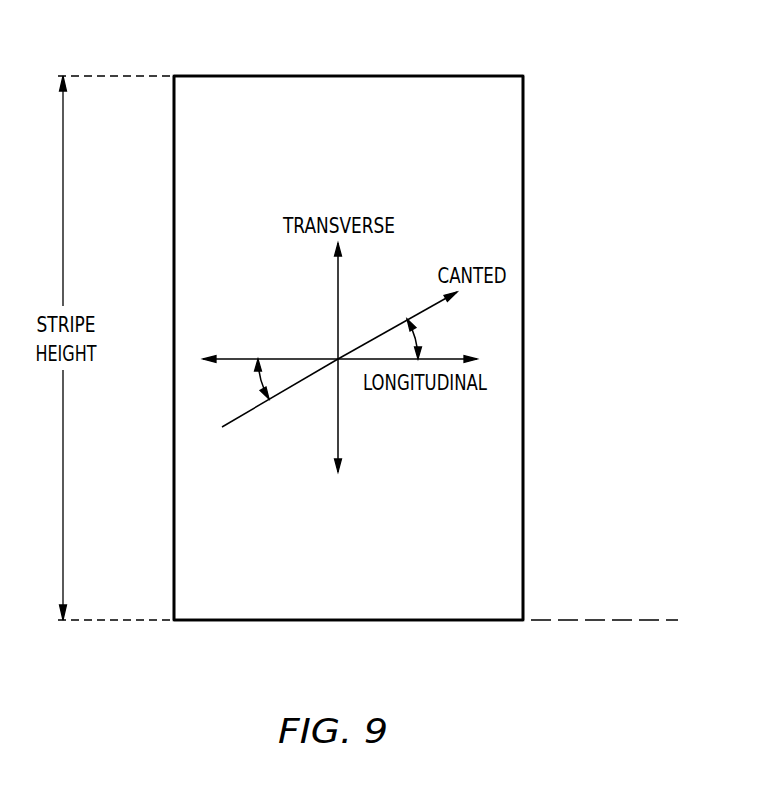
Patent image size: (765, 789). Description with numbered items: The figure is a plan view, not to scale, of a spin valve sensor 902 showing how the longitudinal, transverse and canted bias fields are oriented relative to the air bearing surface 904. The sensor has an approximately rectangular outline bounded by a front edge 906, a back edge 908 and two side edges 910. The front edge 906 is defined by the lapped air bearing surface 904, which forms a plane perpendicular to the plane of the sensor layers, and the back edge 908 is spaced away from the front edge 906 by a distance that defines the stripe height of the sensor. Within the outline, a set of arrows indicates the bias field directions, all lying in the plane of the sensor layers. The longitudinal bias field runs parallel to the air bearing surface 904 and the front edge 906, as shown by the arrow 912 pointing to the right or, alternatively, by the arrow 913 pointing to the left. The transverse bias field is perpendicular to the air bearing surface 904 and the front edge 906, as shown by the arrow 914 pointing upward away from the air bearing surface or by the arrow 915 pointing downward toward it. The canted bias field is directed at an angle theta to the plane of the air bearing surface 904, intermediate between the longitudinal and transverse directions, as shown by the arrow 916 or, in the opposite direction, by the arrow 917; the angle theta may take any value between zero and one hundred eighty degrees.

The spin valve sensor 902 is at (446, 548).
The air bearing surface 904 is at (602, 620).
The front edge 906 is at (378, 620).
The back edge 908 is at (416, 75).
The side edges 910 is at (174, 148).
The arrow (longitudinal bias field direction) 912 is at (440, 357).
The arrow (opposite longitudinal direction) 913 is at (236, 358).
The arrow (transverse bias field direction) 914 is at (338, 283).
The arrow (opposite transverse direction) 915 is at (338, 437).
The arrow (canted bias field direction) 916 is at (423, 311).
The arrow (opposite canted direction) 917 is at (237, 418).